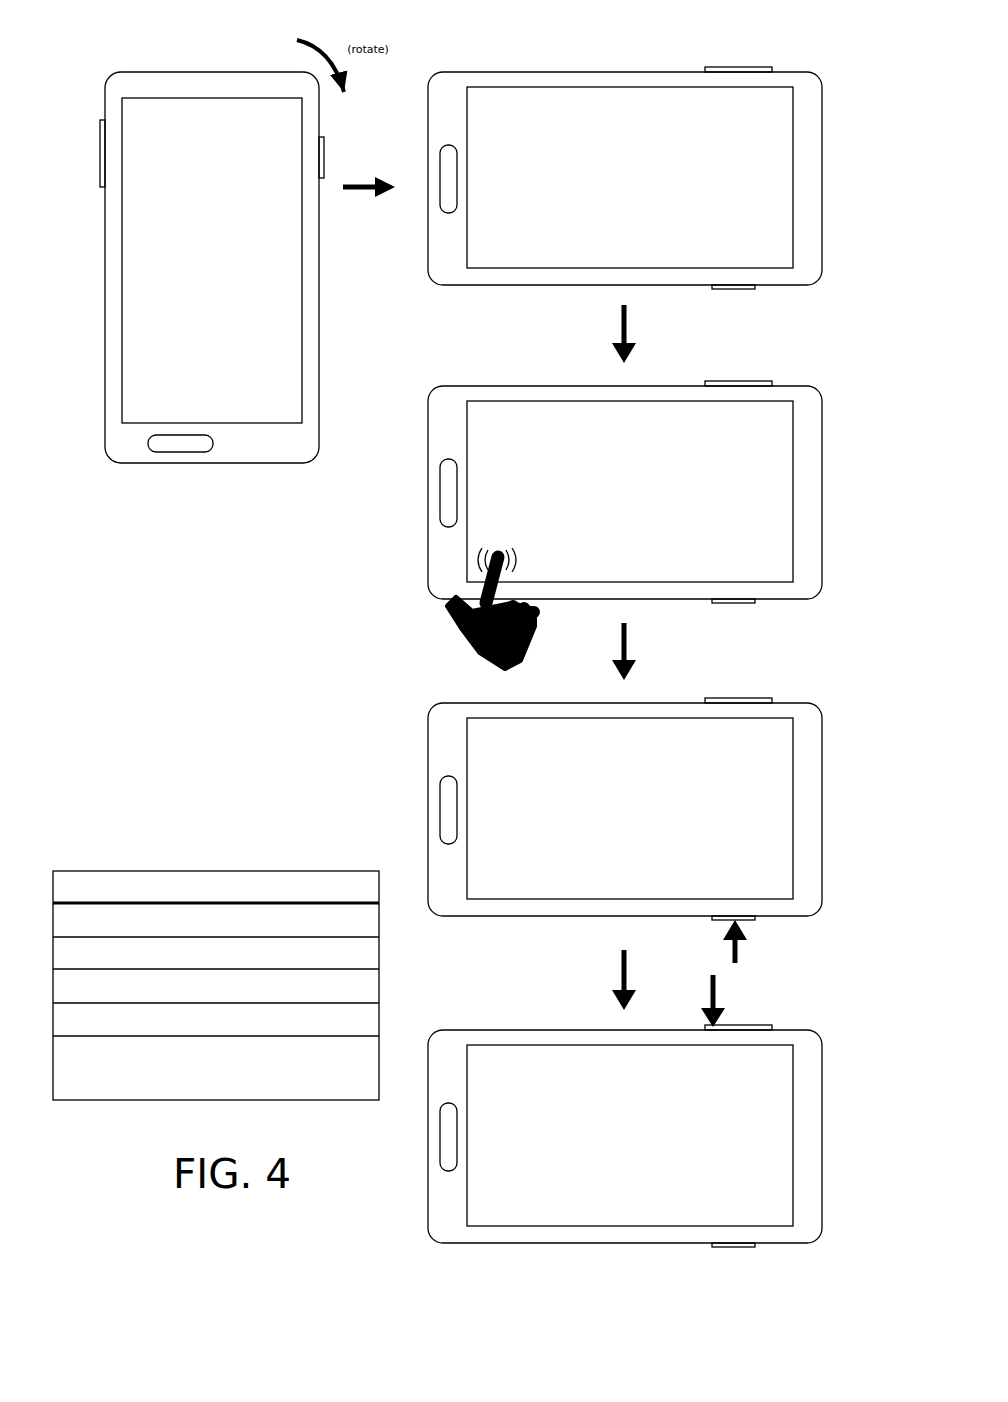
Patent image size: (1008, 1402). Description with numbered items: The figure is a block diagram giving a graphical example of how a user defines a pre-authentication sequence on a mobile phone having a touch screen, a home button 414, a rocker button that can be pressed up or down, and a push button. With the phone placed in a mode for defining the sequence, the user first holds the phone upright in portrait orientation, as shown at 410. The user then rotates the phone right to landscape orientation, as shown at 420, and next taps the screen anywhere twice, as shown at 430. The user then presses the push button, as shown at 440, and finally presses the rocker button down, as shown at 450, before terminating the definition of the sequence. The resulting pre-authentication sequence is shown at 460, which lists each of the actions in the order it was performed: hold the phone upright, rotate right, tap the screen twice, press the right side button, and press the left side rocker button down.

The phone held upright in portrait orientation 410 is at (219, 267).
The home button 414 is at (213, 441).
The phone rotated right to landscape orientation 420 is at (658, 154).
The screen tapped twice 430 is at (657, 499).
The push button pressed 440 is at (657, 802).
The rocker button pressed down 450 is at (658, 1107).
The resulting pre-authentication sequence 460 is at (285, 870).